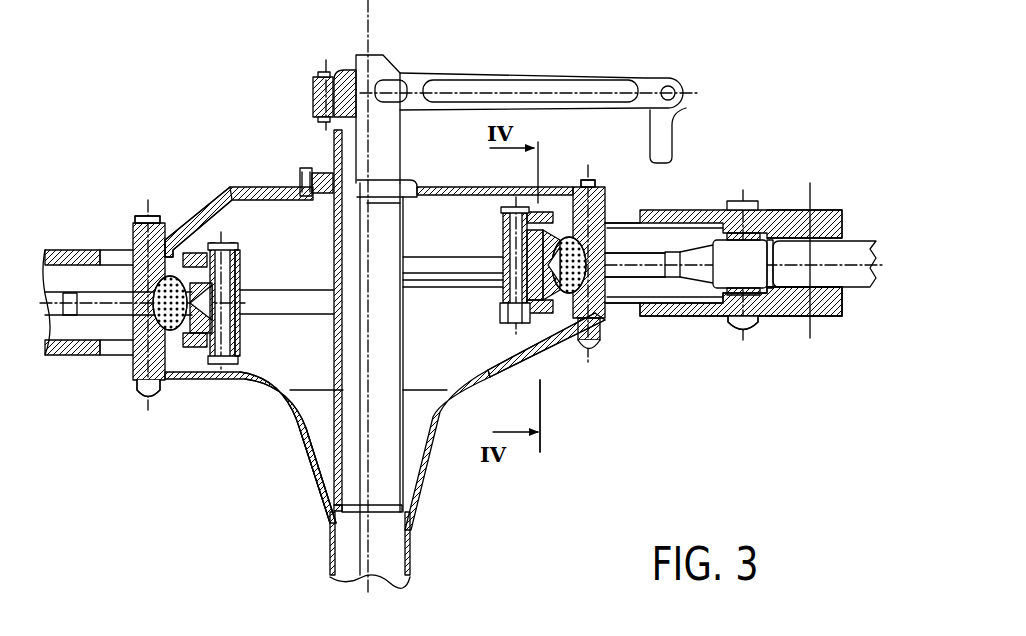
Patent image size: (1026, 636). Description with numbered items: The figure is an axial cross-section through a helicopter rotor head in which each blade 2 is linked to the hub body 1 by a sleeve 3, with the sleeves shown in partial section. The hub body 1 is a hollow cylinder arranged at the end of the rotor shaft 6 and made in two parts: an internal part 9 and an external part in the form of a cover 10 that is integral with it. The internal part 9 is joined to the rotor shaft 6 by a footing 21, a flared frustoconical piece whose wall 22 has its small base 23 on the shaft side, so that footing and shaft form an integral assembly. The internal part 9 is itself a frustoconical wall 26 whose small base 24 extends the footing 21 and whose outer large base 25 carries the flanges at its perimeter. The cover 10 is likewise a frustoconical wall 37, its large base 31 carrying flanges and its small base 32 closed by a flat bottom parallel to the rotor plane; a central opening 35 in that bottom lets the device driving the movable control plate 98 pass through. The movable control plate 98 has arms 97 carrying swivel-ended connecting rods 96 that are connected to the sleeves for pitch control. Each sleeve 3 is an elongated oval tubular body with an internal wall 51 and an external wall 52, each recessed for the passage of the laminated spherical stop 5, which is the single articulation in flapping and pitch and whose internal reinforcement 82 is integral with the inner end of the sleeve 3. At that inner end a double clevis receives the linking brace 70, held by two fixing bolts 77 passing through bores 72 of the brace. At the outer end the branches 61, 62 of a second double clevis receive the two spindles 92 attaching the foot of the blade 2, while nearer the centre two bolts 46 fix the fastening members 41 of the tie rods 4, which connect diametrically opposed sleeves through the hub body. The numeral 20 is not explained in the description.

The hub body 1 is at (562, 382).
The blade 2 is at (858, 255).
The sleeve 3 is at (70, 248).
The tie rod 4 is at (96, 306).
The laminated spherical stop 5 is at (174, 345).
The rotor shaft 6 is at (411, 561).
The internal part 9 is at (229, 380).
The cover 10 is at (240, 186).
The flange bolt 20 is at (158, 215).
The footing 21 is at (306, 488).
The wall 22 is at (298, 448).
The small base 23 is at (410, 506).
The small base 24 is at (490, 380).
The large base 25 is at (546, 364).
The wall 26 is at (541, 422).
The large base 31 is at (135, 240).
The small base 32 is at (302, 180).
The central opening 35 is at (414, 182).
The wall 37 is at (208, 206).
The fastening member 41 is at (640, 225).
The bolt 46 is at (745, 200).
The internal wall 51 is at (700, 318).
The external wall 52 is at (697, 262).
The branch 61 is at (832, 318).
The branch 62 is at (798, 222).
The linking brace 70 is at (207, 280).
The bore 72 is at (214, 300).
The fixing bolt 77 is at (236, 325).
The internal reinforcement 82 is at (134, 348).
The spindle 92 is at (760, 325).
The swivel-ended connecting rod 96 is at (666, 148).
The arm 97 is at (556, 90).
The movable control plate 98 is at (500, 74).